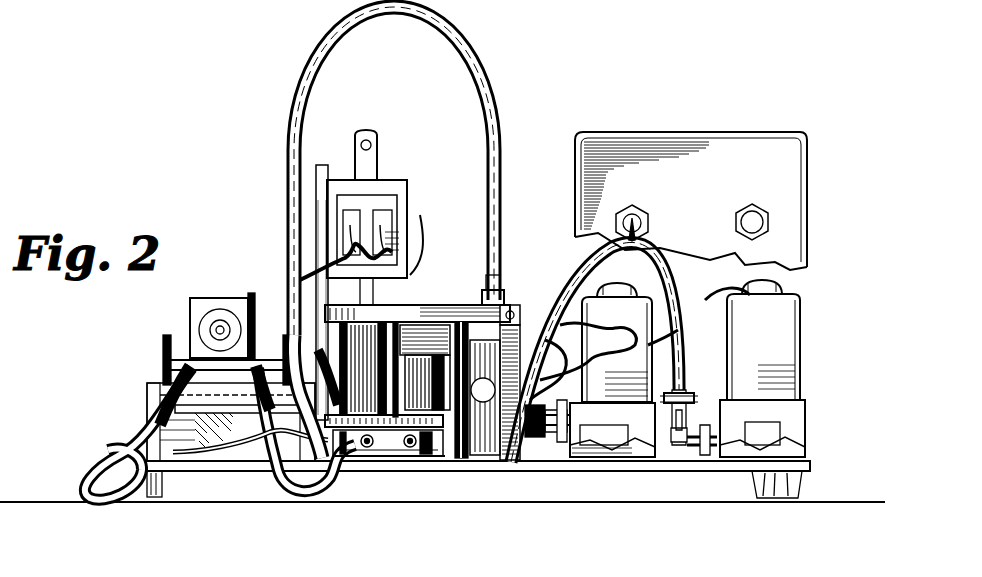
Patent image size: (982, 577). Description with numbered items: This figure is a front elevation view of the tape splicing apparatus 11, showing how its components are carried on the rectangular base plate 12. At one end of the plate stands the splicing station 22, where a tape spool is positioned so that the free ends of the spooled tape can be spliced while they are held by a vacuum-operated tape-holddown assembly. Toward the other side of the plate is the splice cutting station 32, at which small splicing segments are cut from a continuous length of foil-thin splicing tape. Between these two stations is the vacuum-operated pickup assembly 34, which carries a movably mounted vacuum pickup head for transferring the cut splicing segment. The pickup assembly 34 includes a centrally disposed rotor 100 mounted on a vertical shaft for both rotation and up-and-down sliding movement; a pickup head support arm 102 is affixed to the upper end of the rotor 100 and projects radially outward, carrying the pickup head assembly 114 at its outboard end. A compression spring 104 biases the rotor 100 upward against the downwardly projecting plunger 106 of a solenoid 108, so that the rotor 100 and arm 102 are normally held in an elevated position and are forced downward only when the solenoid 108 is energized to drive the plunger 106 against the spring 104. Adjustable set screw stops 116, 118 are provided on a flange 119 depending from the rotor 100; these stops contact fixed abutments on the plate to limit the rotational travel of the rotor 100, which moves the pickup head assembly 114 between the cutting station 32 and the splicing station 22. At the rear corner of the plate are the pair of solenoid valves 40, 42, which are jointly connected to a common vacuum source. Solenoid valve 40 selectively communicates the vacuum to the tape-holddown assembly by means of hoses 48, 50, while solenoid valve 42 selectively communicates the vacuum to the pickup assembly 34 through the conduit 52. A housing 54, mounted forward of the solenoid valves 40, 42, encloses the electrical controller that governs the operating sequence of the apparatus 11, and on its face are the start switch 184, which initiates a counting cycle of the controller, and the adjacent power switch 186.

The tape splicing apparatus 11 is at (524, 116).
The base plate 12 is at (566, 471).
The splicing station 22 is at (182, 328).
The splice cutting station 32 is at (517, 328).
The pickup assembly 34 is at (439, 278).
The solenoid valve 40 is at (624, 331).
The solenoid valve 42 is at (776, 331).
The hose 48 is at (106, 502).
The hose 50 is at (297, 488).
The conduit 52 is at (478, 40).
The housing 54 is at (705, 133).
The rotor 100 is at (395, 455).
The pickup head support arm 102 is at (446, 315).
The compression spring 104 is at (366, 456).
The plunger 106 is at (392, 280).
The solenoid 108 is at (395, 188).
The pickup head assembly 114 is at (498, 290).
The adjustable set screw stop 116 is at (341, 456).
The adjustable set screw stop 118 is at (421, 456).
The flange 119 is at (356, 456).
The start switch 184 is at (750, 211).
The power switch 186 is at (626, 210).